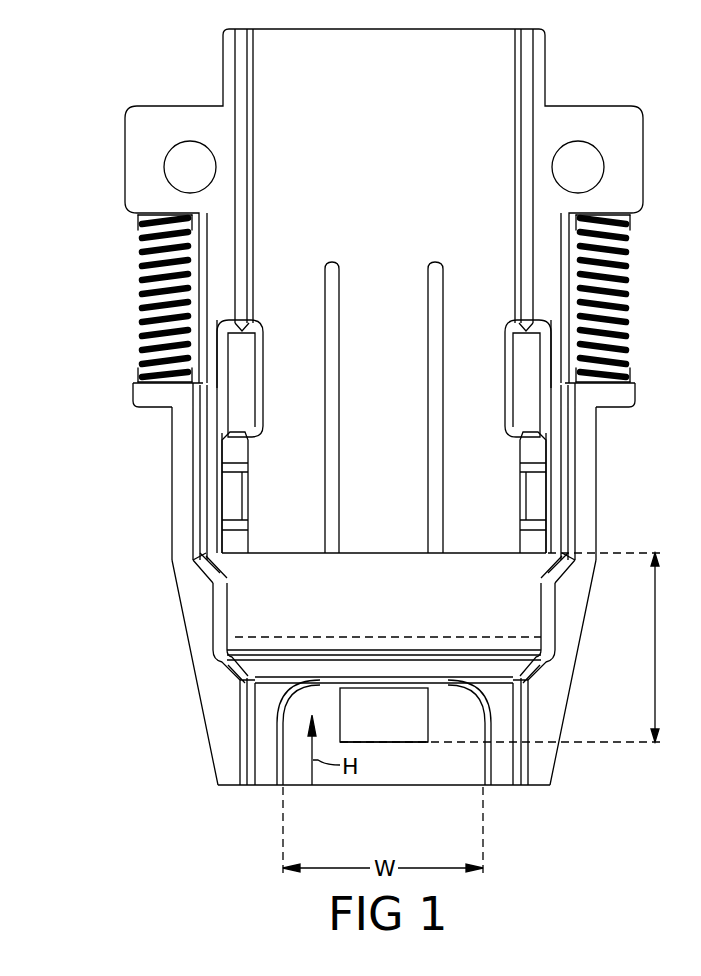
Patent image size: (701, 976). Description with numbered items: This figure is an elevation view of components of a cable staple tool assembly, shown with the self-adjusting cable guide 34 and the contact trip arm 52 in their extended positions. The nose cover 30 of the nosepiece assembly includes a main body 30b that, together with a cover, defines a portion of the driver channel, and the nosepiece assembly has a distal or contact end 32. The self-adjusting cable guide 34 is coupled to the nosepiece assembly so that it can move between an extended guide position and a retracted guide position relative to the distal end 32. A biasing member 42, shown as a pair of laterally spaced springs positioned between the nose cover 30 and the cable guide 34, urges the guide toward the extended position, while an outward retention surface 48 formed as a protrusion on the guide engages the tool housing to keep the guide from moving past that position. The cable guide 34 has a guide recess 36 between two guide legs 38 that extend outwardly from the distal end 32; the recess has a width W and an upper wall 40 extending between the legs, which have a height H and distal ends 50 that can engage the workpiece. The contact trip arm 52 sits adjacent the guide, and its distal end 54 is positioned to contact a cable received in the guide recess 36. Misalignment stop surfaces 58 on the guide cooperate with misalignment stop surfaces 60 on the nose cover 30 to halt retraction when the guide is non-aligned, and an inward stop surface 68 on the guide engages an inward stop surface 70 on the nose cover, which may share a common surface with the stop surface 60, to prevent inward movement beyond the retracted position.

The nose cover 30 is at (545, 105).
The main body 30b is at (262, 88).
The distal end 32 is at (302, 637).
The self-adjusting cable guide 34 is at (215, 693).
The guide recess 36 is at (296, 778).
The guide legs 38 is at (240, 760).
The upper wall 40 is at (383, 683).
The biasing member 42 is at (145, 292).
The outward retention surface 48 is at (160, 407).
The distal ends 50 is at (240, 787).
The contact trip arm 52 is at (405, 708).
The distal end 54 is at (385, 745).
The misalignment stop surfaces 58 is at (205, 572).
The misalignment stop surfaces 60 is at (235, 553).
The inward stop surface 68 is at (230, 665).
The inward stop surface 70 is at (367, 553).